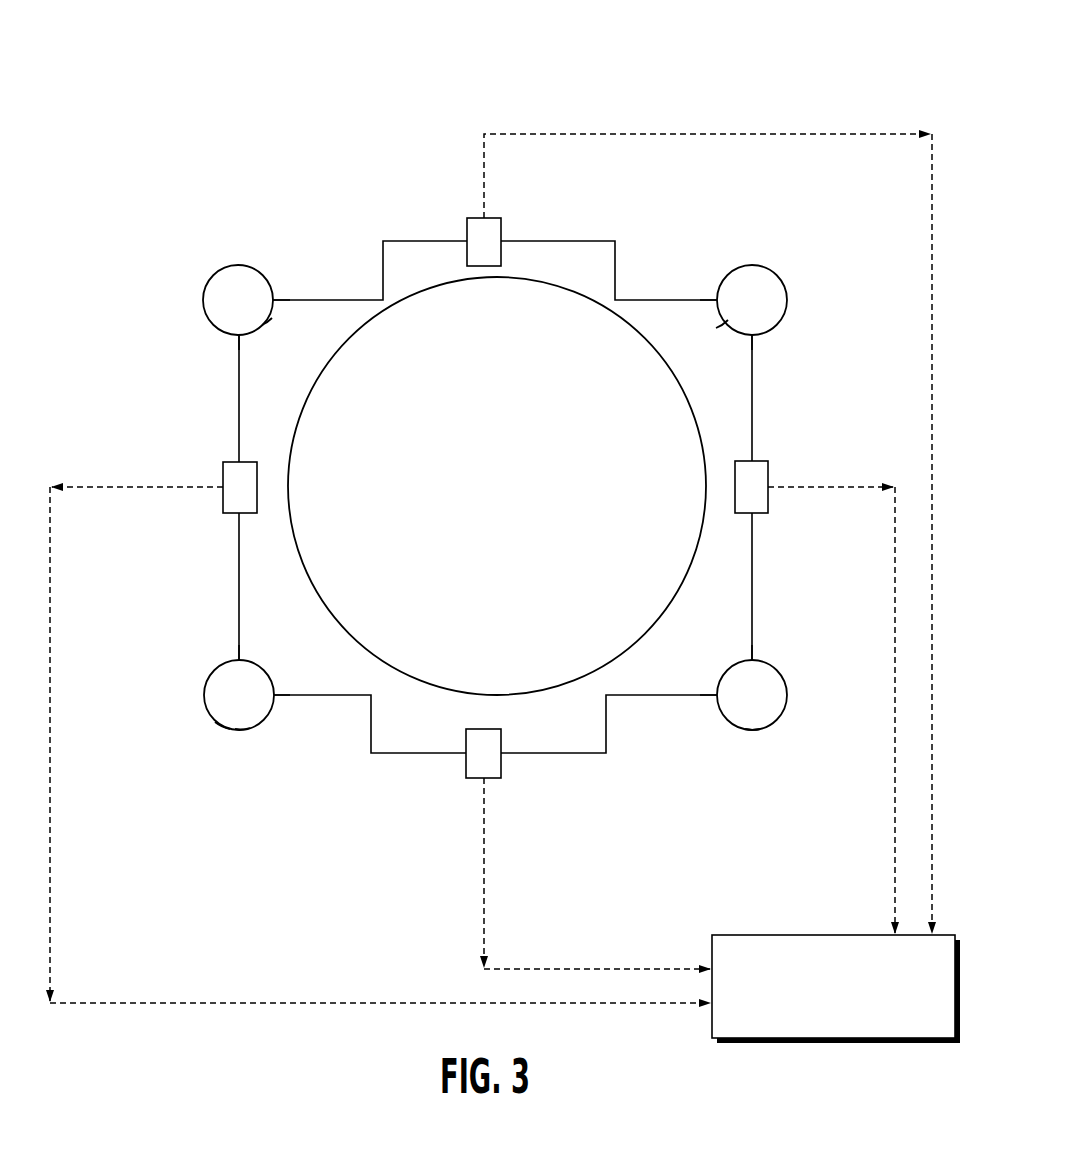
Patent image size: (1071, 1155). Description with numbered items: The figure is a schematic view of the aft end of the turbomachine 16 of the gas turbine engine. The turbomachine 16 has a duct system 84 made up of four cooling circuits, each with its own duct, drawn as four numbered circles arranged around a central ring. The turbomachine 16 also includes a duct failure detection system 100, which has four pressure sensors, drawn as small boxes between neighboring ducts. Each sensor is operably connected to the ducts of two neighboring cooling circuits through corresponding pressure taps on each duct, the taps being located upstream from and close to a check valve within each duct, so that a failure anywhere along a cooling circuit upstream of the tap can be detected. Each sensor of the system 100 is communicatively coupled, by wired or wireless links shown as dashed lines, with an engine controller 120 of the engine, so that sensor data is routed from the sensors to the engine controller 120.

The turbomachine 16 is at (337, 138).
The duct system 84 is at (243, 748).
The duct failure detection system 100 is at (747, 103).
The engine controller 120 is at (851, 1005).